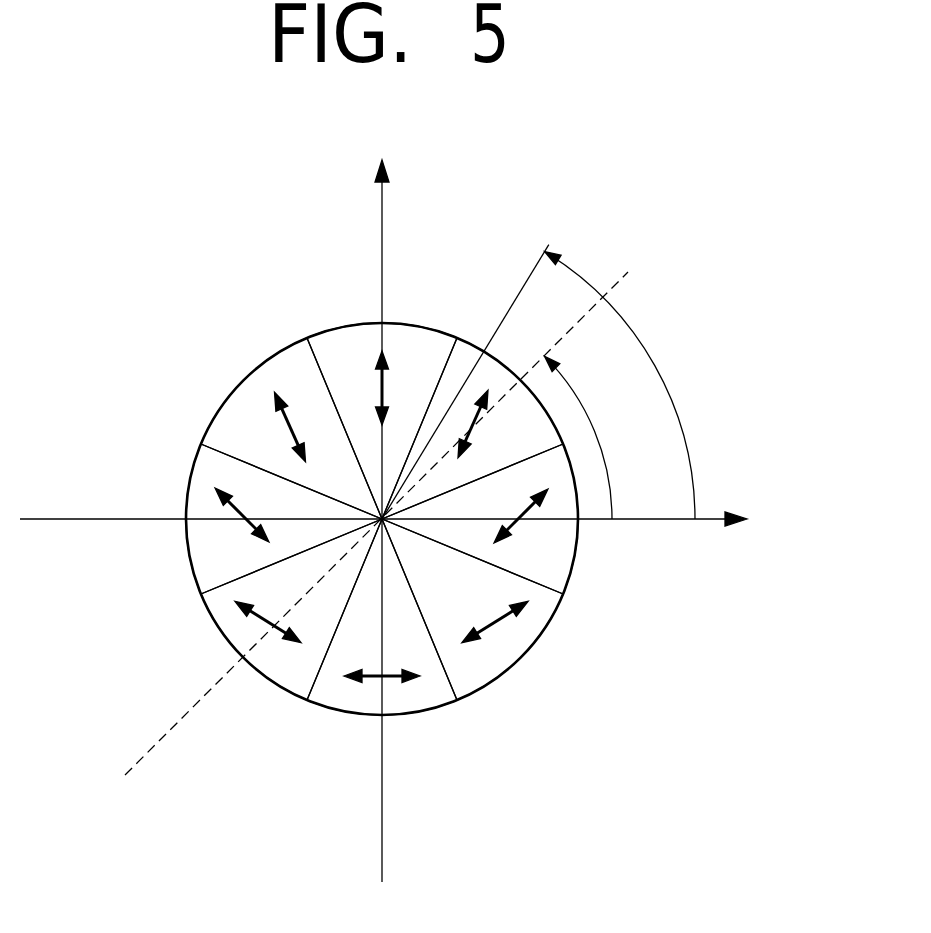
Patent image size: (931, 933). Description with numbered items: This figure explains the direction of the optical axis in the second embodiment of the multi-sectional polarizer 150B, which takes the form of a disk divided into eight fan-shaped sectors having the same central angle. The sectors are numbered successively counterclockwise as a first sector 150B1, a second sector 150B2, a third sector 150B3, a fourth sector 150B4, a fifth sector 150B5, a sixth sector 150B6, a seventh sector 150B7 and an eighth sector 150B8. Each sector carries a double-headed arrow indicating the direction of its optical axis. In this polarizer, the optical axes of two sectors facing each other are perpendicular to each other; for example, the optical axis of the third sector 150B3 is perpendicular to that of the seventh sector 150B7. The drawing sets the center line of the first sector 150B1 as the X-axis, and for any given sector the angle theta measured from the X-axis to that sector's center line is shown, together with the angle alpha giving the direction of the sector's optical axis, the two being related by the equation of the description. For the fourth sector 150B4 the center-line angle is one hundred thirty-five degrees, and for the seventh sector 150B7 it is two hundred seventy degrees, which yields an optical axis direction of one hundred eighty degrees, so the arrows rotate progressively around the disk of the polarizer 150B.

The multi-sectional polarizer 150B is at (394, 495).
The first sector 150B1 is at (618, 577).
The second sector 150B2 is at (482, 350).
The third sector 150B3 is at (418, 323).
The fourth sector 150B4 is at (240, 377).
The fifth sector 150B5 is at (185, 482).
The sixth sector 150B6 is at (167, 650).
The seventh sector 150B7 is at (432, 767).
The eighth sector 150B8 is at (553, 700).